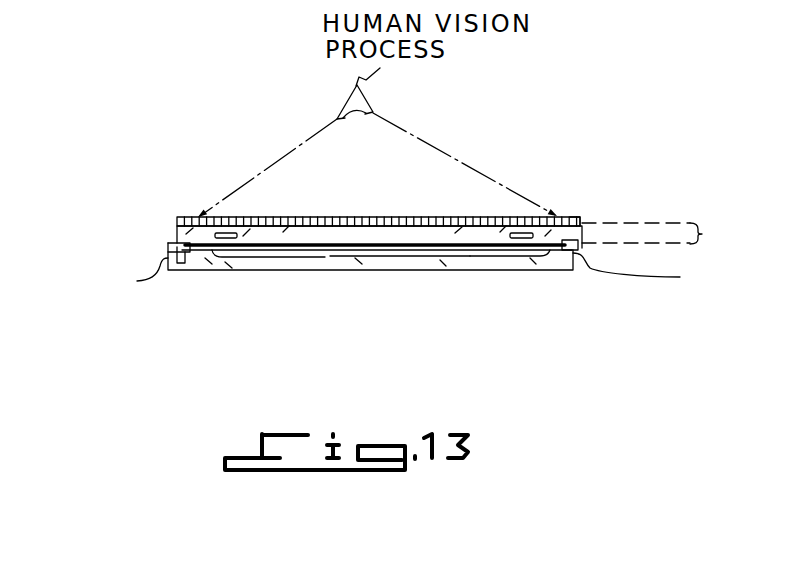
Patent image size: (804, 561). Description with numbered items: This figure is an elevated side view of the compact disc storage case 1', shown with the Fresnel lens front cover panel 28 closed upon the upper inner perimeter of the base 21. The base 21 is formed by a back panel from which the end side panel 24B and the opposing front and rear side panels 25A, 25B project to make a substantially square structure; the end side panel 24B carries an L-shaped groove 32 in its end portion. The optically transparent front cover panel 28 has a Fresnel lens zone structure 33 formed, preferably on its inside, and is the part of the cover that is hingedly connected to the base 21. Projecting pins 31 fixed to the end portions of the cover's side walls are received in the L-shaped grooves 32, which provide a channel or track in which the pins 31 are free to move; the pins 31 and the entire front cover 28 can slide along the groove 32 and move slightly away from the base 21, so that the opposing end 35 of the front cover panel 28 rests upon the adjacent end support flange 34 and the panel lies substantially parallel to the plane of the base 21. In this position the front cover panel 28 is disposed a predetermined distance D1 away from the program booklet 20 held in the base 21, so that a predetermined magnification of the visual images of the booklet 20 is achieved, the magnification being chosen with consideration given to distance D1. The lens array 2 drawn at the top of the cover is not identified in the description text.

The compact disc storage case 1' is at (404, 171).
The lenticular lens array 2 is at (334, 215).
The program booklet 20 is at (472, 250).
The base 21 is at (375, 271).
The end side panel 24B is at (370, 301).
The front side panel 25A is at (132, 281).
The rear side panel 25B is at (650, 273).
The front cover panel 28 is at (568, 216).
The projecting pins 31 is at (190, 253).
The L-shaped grooves 32 is at (172, 245).
The Fresnel lens zone structure 33 is at (388, 237).
The end support flange 34 is at (565, 243).
The opposing end 35 is at (586, 204).
The predetermined distance D1 is at (661, 239).